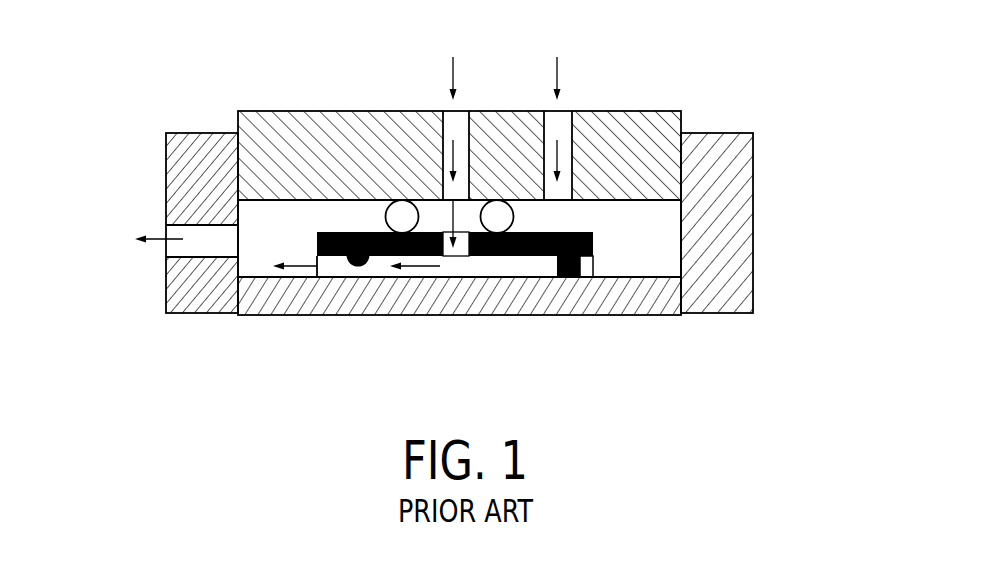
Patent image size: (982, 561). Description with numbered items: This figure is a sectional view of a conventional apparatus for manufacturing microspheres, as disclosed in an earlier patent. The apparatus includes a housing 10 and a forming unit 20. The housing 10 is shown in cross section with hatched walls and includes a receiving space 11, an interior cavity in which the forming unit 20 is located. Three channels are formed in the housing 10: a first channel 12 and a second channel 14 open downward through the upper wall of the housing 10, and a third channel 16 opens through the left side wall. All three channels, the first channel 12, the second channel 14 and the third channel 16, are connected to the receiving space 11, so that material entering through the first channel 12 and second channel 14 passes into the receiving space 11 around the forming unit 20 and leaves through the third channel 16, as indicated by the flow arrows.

The housing 10 is at (723, 162).
The receiving space 11 is at (640, 247).
The first channel 12 is at (561, 120).
The second channel 14 is at (457, 118).
The third channel 16 is at (183, 248).
The forming unit 20 is at (516, 256).